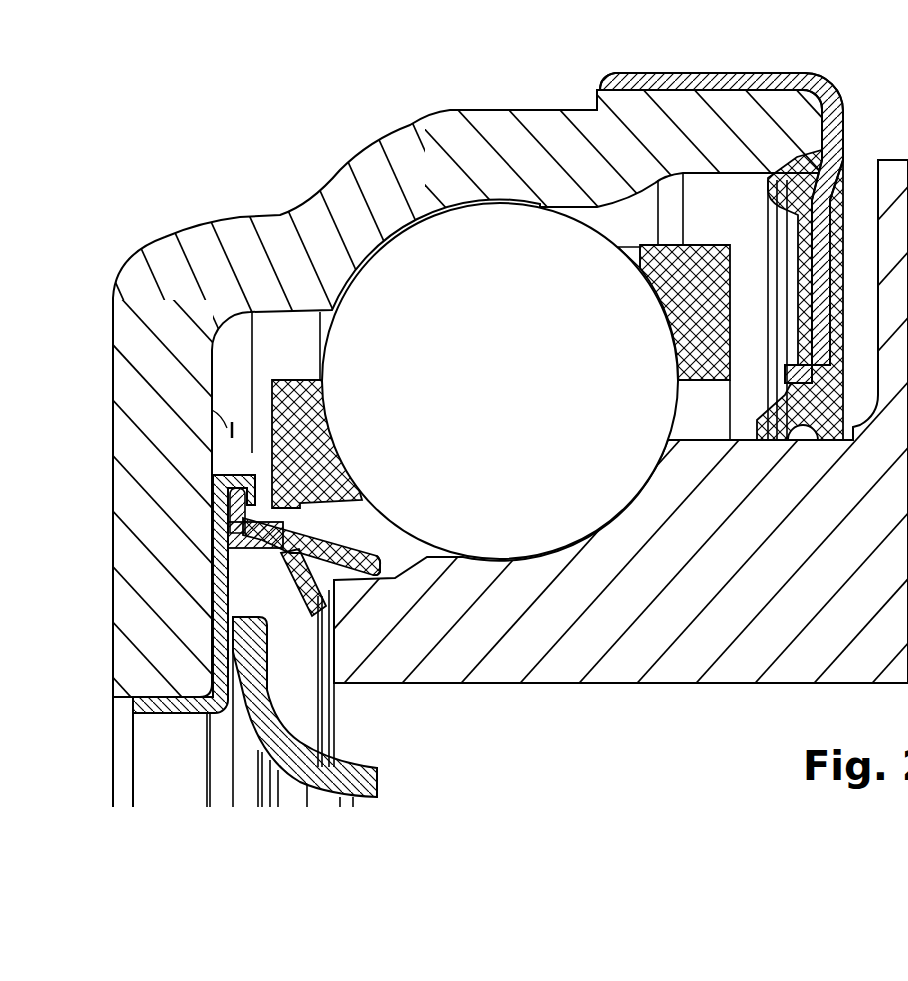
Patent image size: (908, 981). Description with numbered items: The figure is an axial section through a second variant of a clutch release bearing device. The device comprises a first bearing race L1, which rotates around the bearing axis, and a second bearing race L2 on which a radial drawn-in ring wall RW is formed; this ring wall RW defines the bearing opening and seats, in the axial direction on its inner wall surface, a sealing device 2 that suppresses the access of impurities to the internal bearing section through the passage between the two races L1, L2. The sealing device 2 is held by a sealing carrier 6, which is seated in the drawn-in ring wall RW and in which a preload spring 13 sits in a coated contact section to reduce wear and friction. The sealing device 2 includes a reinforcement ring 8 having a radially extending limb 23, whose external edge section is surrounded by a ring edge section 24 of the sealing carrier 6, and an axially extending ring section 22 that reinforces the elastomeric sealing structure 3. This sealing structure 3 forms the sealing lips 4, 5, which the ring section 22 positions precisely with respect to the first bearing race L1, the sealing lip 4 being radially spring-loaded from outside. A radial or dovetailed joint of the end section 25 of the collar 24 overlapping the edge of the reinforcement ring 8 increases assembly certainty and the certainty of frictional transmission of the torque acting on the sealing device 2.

The sealing device 2 is at (365, 533).
The sealing structure 3 is at (288, 553).
The sealing lip 4 is at (368, 562).
The sealing lip 5 is at (310, 612).
The sealing carrier 6 is at (125, 608).
The reinforcement ring 8 is at (133, 587).
The radially extending limb 23 is at (215, 500).
The preload spring 13 is at (270, 732).
The ring section 22 is at (233, 538).
The ring edge section 24 is at (230, 474).
The end section 25 is at (262, 462).
The first bearing race L1 is at (507, 663).
The second bearing race L2 is at (410, 147).
The radial drawn-in ring wall RW is at (147, 631).